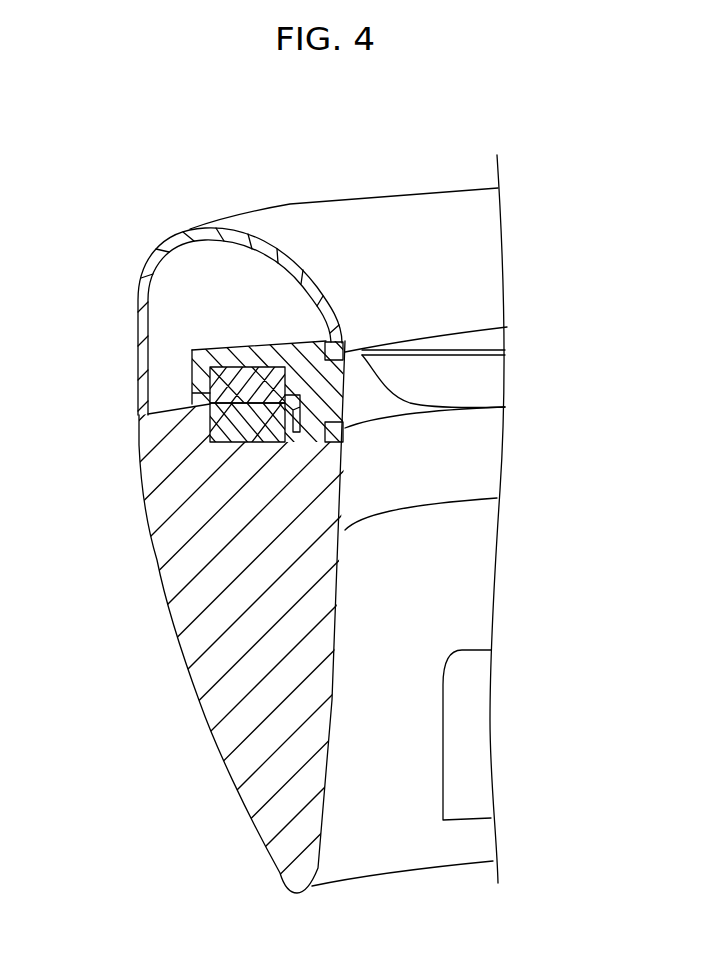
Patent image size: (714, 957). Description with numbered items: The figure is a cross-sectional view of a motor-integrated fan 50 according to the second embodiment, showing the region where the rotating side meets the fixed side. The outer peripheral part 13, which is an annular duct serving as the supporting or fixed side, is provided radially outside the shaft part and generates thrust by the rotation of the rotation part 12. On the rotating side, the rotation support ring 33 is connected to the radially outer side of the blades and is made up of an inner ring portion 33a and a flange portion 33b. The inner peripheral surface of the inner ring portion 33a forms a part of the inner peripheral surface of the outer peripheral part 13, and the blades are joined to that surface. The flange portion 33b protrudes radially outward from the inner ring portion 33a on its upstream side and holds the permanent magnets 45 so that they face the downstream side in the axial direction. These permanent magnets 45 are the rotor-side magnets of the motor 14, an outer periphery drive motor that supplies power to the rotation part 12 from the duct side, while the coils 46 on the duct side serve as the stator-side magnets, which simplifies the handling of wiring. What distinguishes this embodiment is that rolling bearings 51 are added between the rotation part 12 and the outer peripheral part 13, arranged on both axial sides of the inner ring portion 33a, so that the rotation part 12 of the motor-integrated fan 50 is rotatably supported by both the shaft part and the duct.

The motor-integrated fan 50 is at (279, 140).
The outer peripheral part 13 is at (232, 203).
The rolling bearings 51 is at (334, 342).
The rotation support ring 33 is at (253, 321).
The rotation part 12 is at (471, 318).
The flange portion 33b is at (233, 352).
The permanent magnets 45 is at (235, 357).
The motor 14 is at (158, 384).
The coils 46 is at (215, 426).
The inner ring portion 33a is at (318, 437).